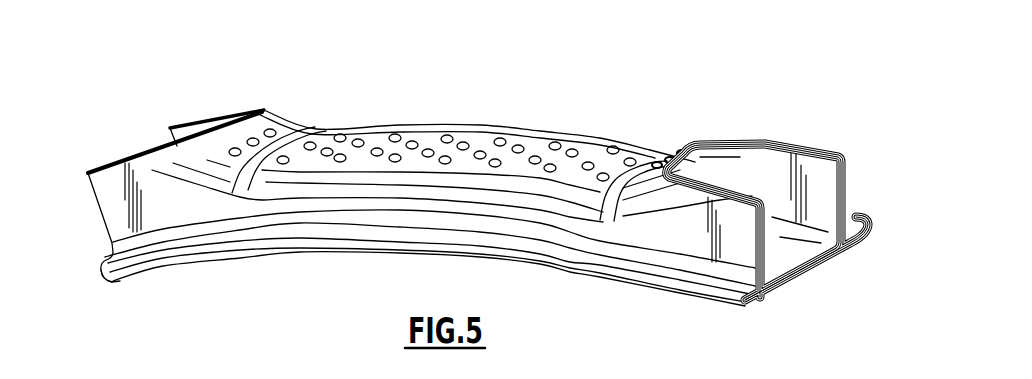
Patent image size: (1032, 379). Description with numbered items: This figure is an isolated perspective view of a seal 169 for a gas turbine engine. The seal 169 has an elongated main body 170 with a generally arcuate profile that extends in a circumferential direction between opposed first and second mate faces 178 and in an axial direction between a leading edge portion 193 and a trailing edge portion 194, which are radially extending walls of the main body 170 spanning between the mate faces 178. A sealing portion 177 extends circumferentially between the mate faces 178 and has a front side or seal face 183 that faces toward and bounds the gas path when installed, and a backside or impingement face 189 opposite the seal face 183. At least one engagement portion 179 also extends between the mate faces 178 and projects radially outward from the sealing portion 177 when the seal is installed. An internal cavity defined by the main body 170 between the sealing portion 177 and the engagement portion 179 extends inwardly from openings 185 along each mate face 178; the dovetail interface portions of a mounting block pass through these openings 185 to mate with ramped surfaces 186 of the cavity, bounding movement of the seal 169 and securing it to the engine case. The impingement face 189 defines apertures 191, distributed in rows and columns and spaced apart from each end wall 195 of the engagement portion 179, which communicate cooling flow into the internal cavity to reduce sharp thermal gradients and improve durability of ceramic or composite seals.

The seal 169 is at (143, 58).
The main body 170 is at (490, 127).
The sealing portion 177 is at (145, 258).
The mate faces 178 is at (100, 262).
The engagement portion 179 is at (113, 164).
The seal face 183 is at (667, 290).
The openings 185 is at (218, 128).
The ramped surfaces 186 is at (735, 163).
The impingement face 189 is at (580, 141).
The apertures 191 is at (292, 135).
The leading edge portion 193 is at (328, 220).
The trailing edge portion 194 is at (445, 124).
The end wall 195 is at (210, 142).